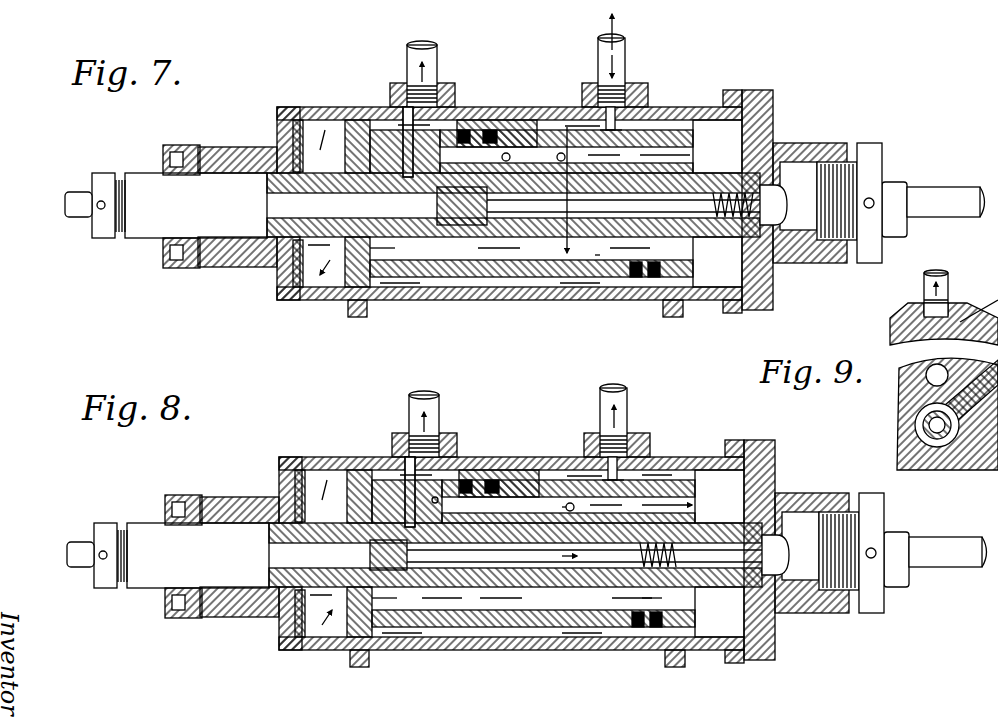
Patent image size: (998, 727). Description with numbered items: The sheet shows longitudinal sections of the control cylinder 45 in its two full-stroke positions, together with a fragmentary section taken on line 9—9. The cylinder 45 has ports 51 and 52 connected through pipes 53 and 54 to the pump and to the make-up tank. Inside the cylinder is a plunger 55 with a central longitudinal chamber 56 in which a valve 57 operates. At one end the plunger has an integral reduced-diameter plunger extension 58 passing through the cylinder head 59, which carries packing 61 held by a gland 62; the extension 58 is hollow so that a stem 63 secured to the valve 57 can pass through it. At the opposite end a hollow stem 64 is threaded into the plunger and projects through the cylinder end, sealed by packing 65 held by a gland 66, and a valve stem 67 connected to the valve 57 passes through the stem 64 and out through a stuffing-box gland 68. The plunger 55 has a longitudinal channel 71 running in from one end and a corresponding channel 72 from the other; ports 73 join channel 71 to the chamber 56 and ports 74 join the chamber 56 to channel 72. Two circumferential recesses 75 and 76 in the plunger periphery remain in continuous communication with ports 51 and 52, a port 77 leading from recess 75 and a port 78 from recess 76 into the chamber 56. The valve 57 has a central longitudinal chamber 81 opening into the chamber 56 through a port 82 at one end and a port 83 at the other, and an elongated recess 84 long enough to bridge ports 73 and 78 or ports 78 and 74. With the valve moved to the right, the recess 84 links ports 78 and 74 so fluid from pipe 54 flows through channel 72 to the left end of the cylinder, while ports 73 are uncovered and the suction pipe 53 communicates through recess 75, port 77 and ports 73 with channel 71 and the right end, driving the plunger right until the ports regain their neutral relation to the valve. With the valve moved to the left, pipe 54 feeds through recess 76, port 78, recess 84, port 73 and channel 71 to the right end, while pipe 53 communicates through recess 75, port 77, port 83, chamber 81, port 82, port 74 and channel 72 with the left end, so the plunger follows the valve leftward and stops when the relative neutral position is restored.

In FIG. 7, the section line 9 is at (579, 137).
In FIG. 7, the control cylinder 45 is at (510, 289).
In FIG. 8, the control cylinder 45 is at (511, 557).
In FIG. 7, the port 51 is at (425, 112).
In FIG. 8, the port 51 is at (450, 475).
In FIG. 7, the port 52 is at (617, 110).
In FIG. 8, the port 52 is at (642, 451).
In FIG. 7, the pipe 53 is at (437, 60).
In FIG. 8, the pipe 53 is at (444, 420).
In FIG. 7, the pipe 54 is at (625, 56).
In FIG. 8, the pipe 54 is at (636, 416).
In FIG. 9, the pipe 54 is at (950, 283).
In FIG. 7, the plunger 55 is at (690, 110).
In FIG. 8, the plunger 55 is at (533, 522).
In FIG. 7, the central longitudinal chamber 56 is at (766, 166).
In FIG. 8, the central longitudinal chamber 56 is at (653, 582).
In FIG. 7, the valve 57 is at (705, 250).
In FIG. 8, the valve 57 is at (651, 631).
In FIG. 9, the valve 57 is at (928, 425).
In FIG. 7, the plunger extension 58 is at (840, 163).
In FIG. 8, the plunger extension 58 is at (858, 542).
In FIG. 7, the cylinder head 59 is at (760, 110).
In FIG. 8, the cylinder head 59 is at (783, 545).
In FIG. 9, the cylinder head 59 is at (944, 322).
In FIG. 7, the packing 61 is at (800, 172).
In FIG. 8, the packing 61 is at (814, 515).
In FIG. 7, the gland 62 is at (871, 150).
In FIG. 8, the gland 62 is at (880, 539).
In FIG. 7, the stem 63 is at (932, 193).
In FIG. 8, the stem 63 is at (948, 541).
In FIG. 7, the hollow stem 64 is at (272, 258).
In FIG. 8, the hollow stem 64 is at (458, 587).
In FIG. 7, the packing 65 is at (250, 148).
In FIG. 8, the packing 65 is at (239, 576).
In FIG. 7, the gland 66 is at (165, 254).
In FIG. 8, the gland 66 is at (183, 541).
In FIG. 7, the valve stem 67 is at (72, 197).
In FIG. 8, the valve stem 67 is at (80, 534).
In FIG. 7, the gland 68 is at (96, 222).
In FIG. 8, the gland 68 is at (110, 544).
In FIG. 7, the longitudinal channel 71 is at (712, 135).
In FIG. 8, the longitudinal channel 71 is at (719, 496).
In FIG. 9, the longitudinal channel 71 is at (926, 373).
In FIG. 7, the longitudinal channel 72 is at (413, 250).
In FIG. 8, the longitudinal channel 72 is at (380, 646).
In FIG. 7, the ports 73 is at (492, 157).
In FIG. 8, the ports 73 is at (541, 506).
In FIG. 7, the ports 74 is at (646, 242).
In FIG. 8, the ports 74 is at (655, 640).
In FIG. 7, the circumferential recess 75 is at (450, 284).
In FIG. 8, the circumferential recess 75 is at (403, 654).
In FIG. 7, the circumferential recess 76 is at (578, 283).
In FIG. 8, the circumferential recess 76 is at (636, 556).
In FIG. 7, the port 77 is at (404, 160).
In FIG. 8, the port 77 is at (391, 492).
In FIG. 7, the port 78 is at (556, 157).
In FIG. 8, the port 78 is at (553, 509).
In FIG. 8, the central longitudinal chamber 81 is at (583, 555).
In FIG. 8, the port 82 is at (667, 506).
In FIG. 8, the port 83 is at (435, 509).
In FIG. 7, the elongated recess 84 is at (662, 156).
In FIG. 8, the elongated recess 84 is at (461, 596).